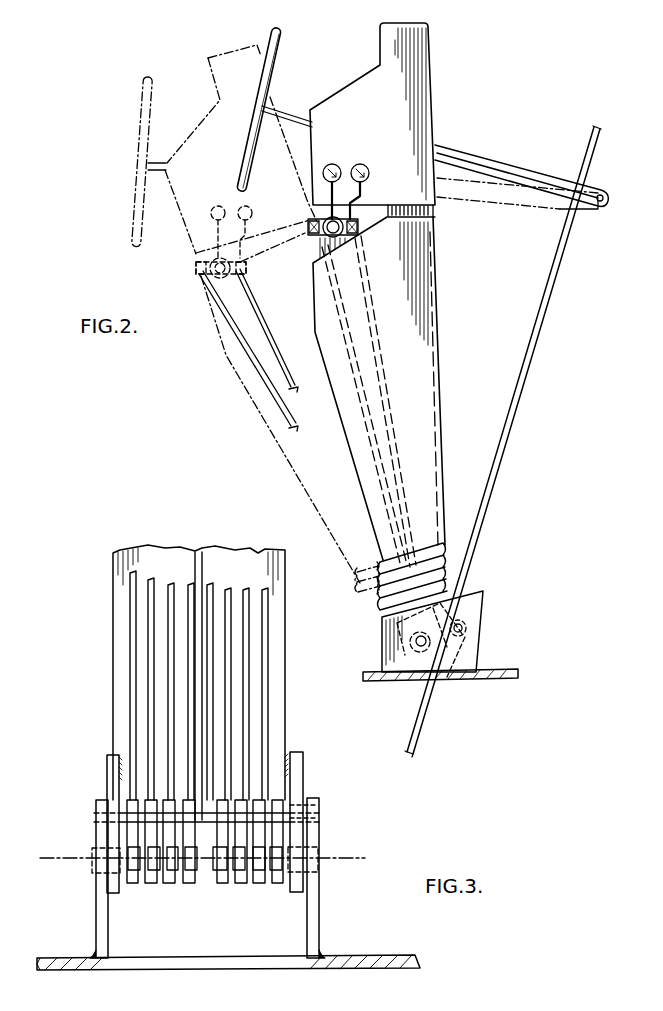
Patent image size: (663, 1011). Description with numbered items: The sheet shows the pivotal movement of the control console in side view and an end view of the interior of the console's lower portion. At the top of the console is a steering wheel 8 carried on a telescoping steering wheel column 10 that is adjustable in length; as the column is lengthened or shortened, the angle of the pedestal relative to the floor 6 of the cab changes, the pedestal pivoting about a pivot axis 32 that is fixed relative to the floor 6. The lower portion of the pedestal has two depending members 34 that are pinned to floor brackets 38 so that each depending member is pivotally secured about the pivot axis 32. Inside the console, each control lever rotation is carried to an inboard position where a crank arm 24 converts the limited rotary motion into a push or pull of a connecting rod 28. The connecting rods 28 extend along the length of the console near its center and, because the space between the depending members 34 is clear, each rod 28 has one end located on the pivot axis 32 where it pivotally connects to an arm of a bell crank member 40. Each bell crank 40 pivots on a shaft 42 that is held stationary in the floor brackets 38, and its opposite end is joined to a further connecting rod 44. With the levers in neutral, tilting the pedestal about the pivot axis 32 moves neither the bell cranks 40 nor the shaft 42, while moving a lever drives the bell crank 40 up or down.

In FIG. 2, the floor 6 is at (378, 680).
In FIG. 3, the floor 6 is at (393, 953).
In FIG. 2, the steering wheel 8 is at (281, 50).
In FIG. 2, the telescoping steering wheel column 10 is at (483, 160).
In FIG. 2, the crank arm 24 is at (358, 222).
In FIG. 2, the connecting rods 28 is at (380, 397).
In FIG. 3, the connecting rods 28 is at (148, 637).
In FIG. 3, the pivot axis 32 is at (67, 862).
In FIG. 3, the depending members 34 is at (110, 840).
In FIG. 2, the floor brackets 38 is at (383, 657).
In FIG. 3, the floor brackets 38 is at (102, 912).
In FIG. 2, the bell crank member 40 is at (455, 600).
In FIG. 3, the bell crank member 40 is at (278, 823).
In FIG. 2, the shaft 42 is at (465, 632).
In FIG. 3, the shaft 42 is at (120, 817).
In FIG. 2, the further connecting rod 44 is at (442, 703).